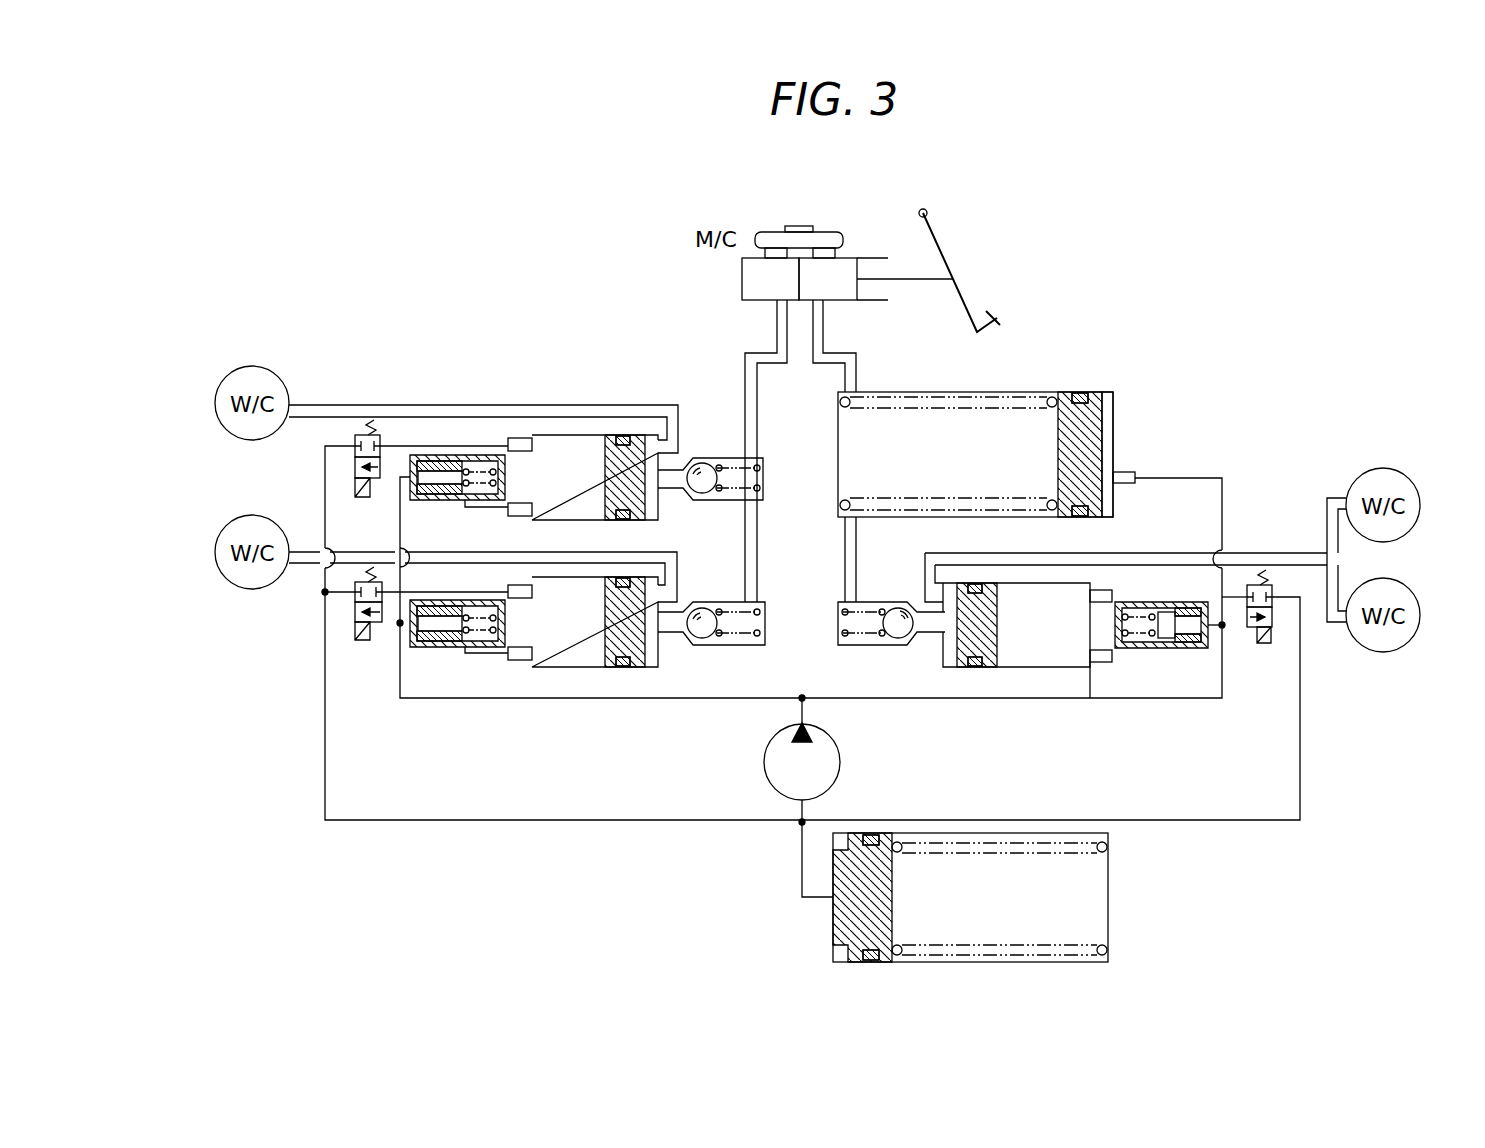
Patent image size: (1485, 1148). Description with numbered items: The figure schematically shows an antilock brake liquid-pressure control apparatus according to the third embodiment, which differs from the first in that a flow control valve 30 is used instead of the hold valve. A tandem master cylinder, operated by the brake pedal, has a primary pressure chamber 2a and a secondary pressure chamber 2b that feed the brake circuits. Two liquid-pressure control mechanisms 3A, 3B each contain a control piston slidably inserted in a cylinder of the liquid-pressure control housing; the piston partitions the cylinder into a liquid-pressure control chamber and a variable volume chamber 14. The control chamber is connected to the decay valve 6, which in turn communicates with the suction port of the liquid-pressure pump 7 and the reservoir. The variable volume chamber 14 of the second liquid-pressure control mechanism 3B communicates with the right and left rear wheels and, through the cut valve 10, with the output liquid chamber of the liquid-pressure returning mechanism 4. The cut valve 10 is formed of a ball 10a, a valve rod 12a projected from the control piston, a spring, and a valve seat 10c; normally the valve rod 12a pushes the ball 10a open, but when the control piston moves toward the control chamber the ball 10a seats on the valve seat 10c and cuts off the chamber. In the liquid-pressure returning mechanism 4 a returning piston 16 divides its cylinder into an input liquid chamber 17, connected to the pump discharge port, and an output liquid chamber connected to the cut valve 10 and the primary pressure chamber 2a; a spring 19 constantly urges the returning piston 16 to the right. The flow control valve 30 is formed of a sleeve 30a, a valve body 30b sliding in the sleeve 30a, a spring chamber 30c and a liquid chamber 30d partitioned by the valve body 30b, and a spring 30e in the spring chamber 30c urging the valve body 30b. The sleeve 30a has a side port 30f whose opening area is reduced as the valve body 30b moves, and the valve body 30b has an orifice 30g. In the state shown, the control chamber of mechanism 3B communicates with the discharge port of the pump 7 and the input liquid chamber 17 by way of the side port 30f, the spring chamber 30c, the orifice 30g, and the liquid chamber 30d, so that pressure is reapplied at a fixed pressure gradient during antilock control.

The primary pressure chamber 2a is at (842, 298).
The secondary pressure chamber 2b is at (758, 298).
The liquid-pressure control mechanism 3A is at (534, 553).
The second liquid-pressure control mechanism 3B is at (998, 657).
The liquid-pressure returning mechanism 4 is at (1028, 404).
The decay valve 6 is at (355, 463).
The liquid-pressure pump 7 is at (762, 762).
The cut valve 10 is at (800, 577).
The ball 10a is at (898, 635).
The valve seat 10c is at (920, 600).
The valve rod 12a is at (925, 640).
The variable volume chamber 14 is at (945, 587).
The returning piston 16 is at (1092, 427).
The input liquid chamber 17 is at (1108, 433).
The spring 19 is at (1017, 402).
The flow control valve 30 is at (1167, 644).
The sleeve 30a is at (1178, 648).
The valve body 30b is at (1200, 620).
The spring chamber 30c is at (1118, 625).
The liquid chamber 30d is at (1197, 628).
The spring 30e is at (1132, 643).
The side port 30f is at (1160, 648).
The orifice 30g is at (1167, 623).